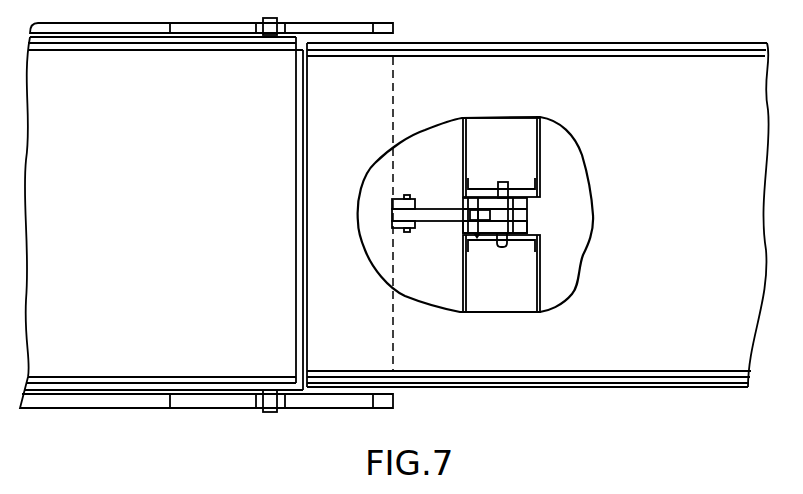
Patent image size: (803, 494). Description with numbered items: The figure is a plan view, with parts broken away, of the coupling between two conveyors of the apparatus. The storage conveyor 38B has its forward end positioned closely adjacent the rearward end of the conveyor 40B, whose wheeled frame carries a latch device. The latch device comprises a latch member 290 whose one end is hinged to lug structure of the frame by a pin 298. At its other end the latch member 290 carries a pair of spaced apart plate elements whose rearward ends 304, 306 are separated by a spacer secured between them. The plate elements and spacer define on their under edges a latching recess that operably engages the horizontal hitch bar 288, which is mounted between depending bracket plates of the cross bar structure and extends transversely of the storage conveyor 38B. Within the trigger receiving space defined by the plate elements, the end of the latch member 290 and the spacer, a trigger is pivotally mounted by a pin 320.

The conveyor 40B is at (160, 356).
The storage conveyor 38B is at (707, 338).
The pin 298 is at (408, 198).
The latch member 290 is at (441, 222).
The pin 320 is at (479, 197).
The rearward end 304 is at (527, 201).
The rearward end 306 is at (527, 227).
The hitch bar 288 is at (500, 247).